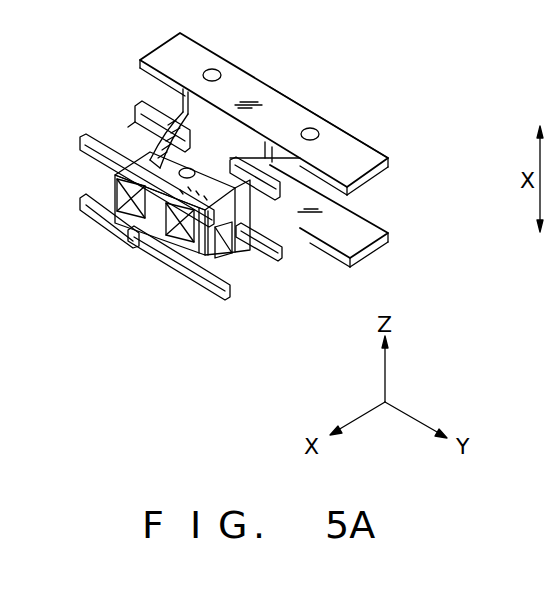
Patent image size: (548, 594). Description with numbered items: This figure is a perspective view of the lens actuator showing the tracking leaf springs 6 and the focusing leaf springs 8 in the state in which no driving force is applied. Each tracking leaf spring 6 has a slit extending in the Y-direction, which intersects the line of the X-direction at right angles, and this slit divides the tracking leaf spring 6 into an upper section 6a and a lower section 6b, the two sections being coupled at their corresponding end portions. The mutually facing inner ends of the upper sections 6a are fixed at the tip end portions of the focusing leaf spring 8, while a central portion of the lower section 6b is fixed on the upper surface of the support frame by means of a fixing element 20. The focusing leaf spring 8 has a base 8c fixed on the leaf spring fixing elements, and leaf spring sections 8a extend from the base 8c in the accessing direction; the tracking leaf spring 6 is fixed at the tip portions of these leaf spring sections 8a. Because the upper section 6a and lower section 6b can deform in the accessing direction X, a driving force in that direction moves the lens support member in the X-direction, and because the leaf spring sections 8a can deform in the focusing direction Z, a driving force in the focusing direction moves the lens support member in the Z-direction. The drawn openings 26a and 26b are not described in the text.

The focusing leaf spring 8 is at (367, 228).
The leaf spring section 8a is at (165, 120).
The base 8c is at (352, 147).
The fixing element 20 is at (140, 157).
The side opening of housing 26a is at (228, 252).
The front openings of housing 26b is at (173, 252).
The tracking leaf spring 6 is at (230, 298).
The upper section 6a is at (80, 142).
The lower section 6b is at (137, 126).